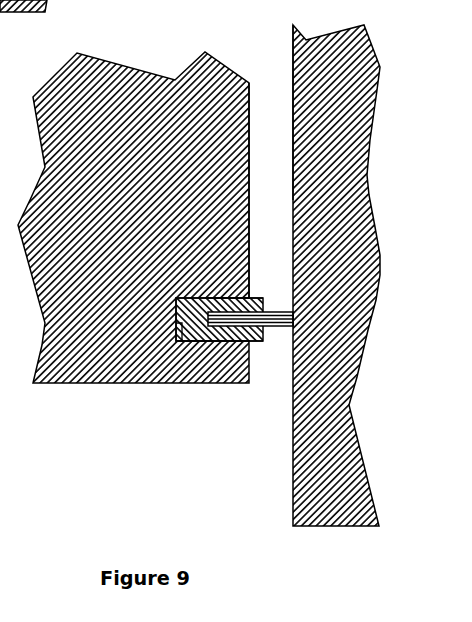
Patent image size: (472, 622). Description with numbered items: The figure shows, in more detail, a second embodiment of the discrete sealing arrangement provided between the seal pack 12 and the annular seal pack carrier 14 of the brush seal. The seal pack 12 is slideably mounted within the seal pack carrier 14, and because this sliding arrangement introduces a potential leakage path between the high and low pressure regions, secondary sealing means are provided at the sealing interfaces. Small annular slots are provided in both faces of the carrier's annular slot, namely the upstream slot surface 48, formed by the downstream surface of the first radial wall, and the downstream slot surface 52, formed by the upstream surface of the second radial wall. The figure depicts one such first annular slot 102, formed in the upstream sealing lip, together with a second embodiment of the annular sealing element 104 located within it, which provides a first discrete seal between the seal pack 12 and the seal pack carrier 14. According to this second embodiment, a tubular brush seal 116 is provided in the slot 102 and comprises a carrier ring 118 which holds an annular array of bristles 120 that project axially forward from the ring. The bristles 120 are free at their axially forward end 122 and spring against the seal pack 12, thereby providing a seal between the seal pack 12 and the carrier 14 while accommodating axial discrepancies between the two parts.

The seal pack 12 is at (0, 32).
The seal pack carrier 14 is at (77, 383).
The upstream slot surface 48 is at (250, 97).
The downstream slot surface 52 is at (292, 42).
The first annular slot 102 is at (173, 325).
The annular sealing element 104 is at (247, 342).
The tubular brush seal 116 is at (210, 341).
The carrier ring 118 is at (257, 298).
The bristles 120 is at (265, 328).
The axially forward end of bristles 122 is at (293, 325).